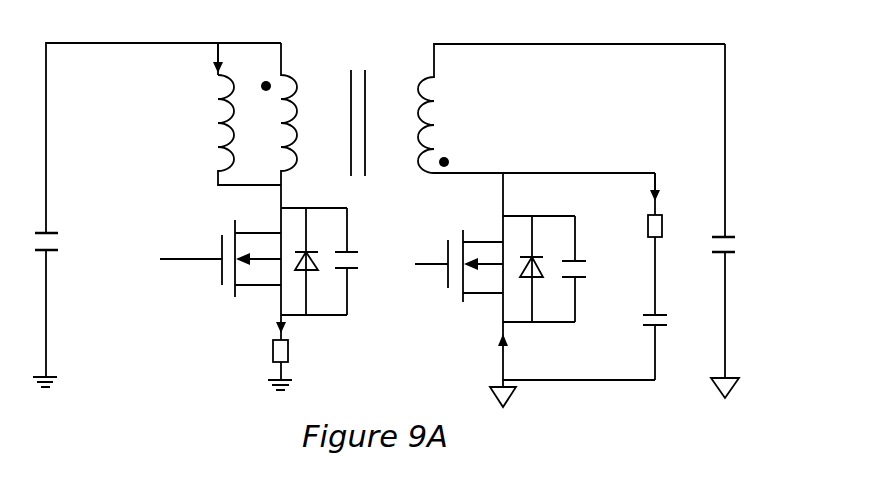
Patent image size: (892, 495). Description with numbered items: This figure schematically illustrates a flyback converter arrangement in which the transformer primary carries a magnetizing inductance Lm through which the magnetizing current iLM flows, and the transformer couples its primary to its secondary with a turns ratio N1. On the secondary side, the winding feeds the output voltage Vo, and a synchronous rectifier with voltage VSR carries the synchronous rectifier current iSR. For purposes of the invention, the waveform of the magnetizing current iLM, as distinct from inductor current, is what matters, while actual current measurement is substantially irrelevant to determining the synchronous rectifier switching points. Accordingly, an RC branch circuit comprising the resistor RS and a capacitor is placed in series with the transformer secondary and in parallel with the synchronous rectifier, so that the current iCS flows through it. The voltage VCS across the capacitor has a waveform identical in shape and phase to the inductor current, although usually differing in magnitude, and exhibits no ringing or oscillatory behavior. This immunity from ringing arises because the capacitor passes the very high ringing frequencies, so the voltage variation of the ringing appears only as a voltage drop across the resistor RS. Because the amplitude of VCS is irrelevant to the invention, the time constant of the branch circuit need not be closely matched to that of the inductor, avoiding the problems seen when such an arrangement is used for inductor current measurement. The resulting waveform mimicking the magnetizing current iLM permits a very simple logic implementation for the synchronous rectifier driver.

The magnetizing inductance Lm is at (226, 114).
The magnetizing current iLM is at (225, 36).
The transformer turns ratio N1 is at (356, 101).
The synchronous rectifier current iSR is at (535, 276).
The synchronous rectifier voltage VSR is at (551, 255).
The resistor RS is at (671, 244).
The current sense current iCS is at (645, 165).
The capacitor voltage VCS is at (677, 328).
The output voltage Vo is at (735, 221).